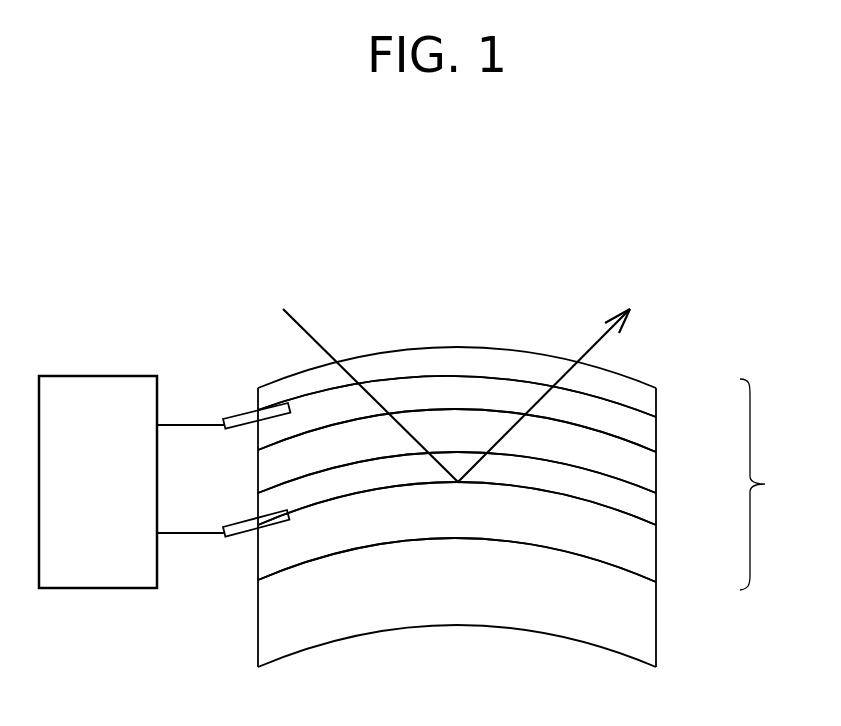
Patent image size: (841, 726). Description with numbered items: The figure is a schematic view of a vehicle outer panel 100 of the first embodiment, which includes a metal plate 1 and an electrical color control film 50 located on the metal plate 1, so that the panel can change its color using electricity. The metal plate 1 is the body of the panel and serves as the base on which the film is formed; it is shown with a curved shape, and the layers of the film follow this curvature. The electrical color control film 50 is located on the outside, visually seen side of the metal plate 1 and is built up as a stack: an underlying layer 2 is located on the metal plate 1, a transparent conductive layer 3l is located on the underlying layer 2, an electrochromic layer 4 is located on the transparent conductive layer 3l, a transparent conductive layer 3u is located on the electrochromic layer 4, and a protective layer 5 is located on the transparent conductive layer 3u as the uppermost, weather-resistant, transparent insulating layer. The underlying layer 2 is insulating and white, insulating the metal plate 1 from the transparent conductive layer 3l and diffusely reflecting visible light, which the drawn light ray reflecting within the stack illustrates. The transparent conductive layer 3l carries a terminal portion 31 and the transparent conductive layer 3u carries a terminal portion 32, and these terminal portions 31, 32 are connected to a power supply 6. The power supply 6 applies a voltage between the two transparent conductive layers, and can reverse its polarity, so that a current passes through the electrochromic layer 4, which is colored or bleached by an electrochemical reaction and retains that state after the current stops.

The vehicle outer panel 100 is at (505, 415).
The metal plate 1 is at (658, 625).
The underlying layer 2 is at (658, 555).
The transparent conductive layer 3l is at (658, 510).
The electrochromic layer 4 is at (658, 470).
The transparent conductive layer 3u is at (658, 433).
The protective layer 5 is at (658, 397).
The electrical color control film 50 is at (773, 484).
The terminal portion 31 is at (240, 541).
The terminal portion 32 is at (236, 418).
The power supply 6 is at (115, 588).